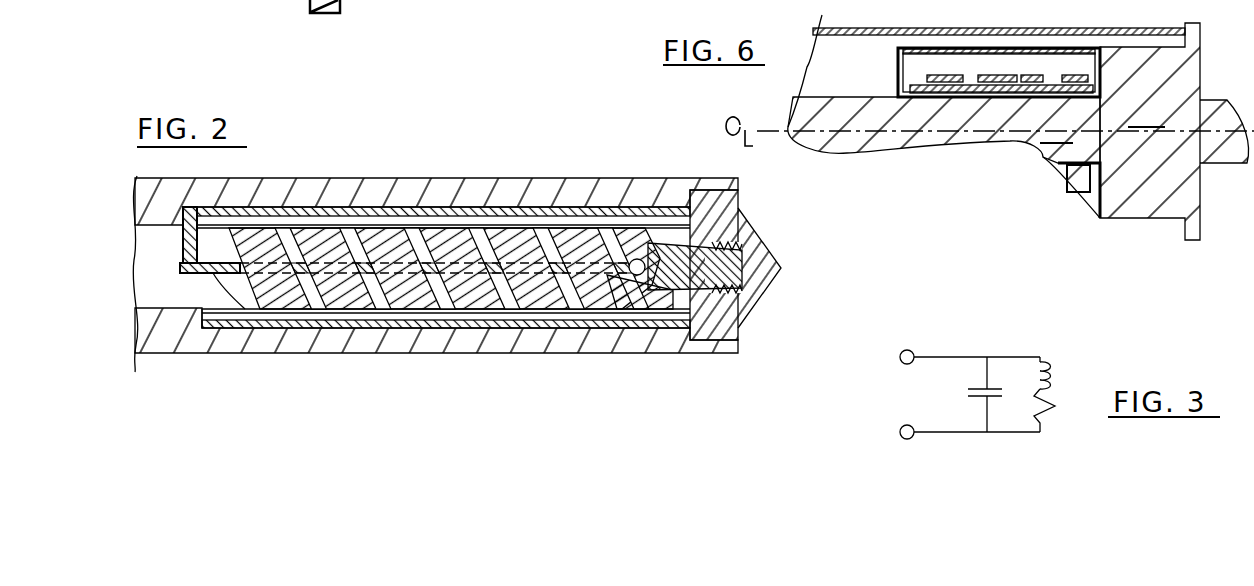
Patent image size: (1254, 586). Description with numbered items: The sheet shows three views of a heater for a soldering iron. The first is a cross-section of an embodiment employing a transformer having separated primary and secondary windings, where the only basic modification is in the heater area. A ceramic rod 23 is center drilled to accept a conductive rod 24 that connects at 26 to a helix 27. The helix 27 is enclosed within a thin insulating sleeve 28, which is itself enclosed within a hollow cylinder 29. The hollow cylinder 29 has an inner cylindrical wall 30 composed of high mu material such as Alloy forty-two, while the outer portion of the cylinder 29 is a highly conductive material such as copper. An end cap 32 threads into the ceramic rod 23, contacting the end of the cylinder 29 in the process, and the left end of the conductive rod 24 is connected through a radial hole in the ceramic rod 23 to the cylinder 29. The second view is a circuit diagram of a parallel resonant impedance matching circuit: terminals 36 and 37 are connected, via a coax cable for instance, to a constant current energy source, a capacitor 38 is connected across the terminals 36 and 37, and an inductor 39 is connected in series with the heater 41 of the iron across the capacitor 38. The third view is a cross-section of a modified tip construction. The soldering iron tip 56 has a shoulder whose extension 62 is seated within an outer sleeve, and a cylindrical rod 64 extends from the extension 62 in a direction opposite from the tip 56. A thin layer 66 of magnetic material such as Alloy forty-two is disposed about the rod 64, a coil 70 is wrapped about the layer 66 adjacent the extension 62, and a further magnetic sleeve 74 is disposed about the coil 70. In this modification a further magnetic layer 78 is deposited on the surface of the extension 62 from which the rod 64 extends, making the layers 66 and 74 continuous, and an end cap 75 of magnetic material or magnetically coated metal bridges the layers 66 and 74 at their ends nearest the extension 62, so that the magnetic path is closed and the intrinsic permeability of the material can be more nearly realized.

In FIG. 2, the ceramic rod 23 is at (653, 311).
In FIG. 2, the conductive rod 24 is at (247, 328).
In FIG. 2, the connection 26 is at (645, 263).
In FIG. 2, the helix 27 is at (557, 240).
In FIG. 2, the insulating sleeve 28 is at (553, 196).
In FIG. 2, the hollow cylinder 29 is at (421, 197).
In FIG. 2, the inner cylindrical wall 30 is at (347, 212).
In FIG. 2, the end cap 32 is at (731, 228).
In FIG. 3, the terminal 36 is at (903, 350).
In FIG. 3, the terminal 37 is at (905, 440).
In FIG. 3, the capacitor 38 is at (967, 390).
In FIG. 3, the inductor 39 is at (1047, 362).
In FIG. 3, the heater 41 is at (1050, 412).
In FIG. 6, the tip 56 is at (1227, 137).
In FIG. 6, the extension 62 is at (1150, 131).
In FIG. 6, the cylindrical rod 64 is at (944, 157).
In FIG. 6, the layer of magnetic material 66 is at (920, 97).
In FIG. 6, the coil 70 is at (1003, 75).
In FIG. 6, the magnetic sleeve 74 is at (917, 50).
In FIG. 6, the end cap 75 is at (900, 72).
In FIG. 6, the magnetic layer 78 is at (1102, 70).